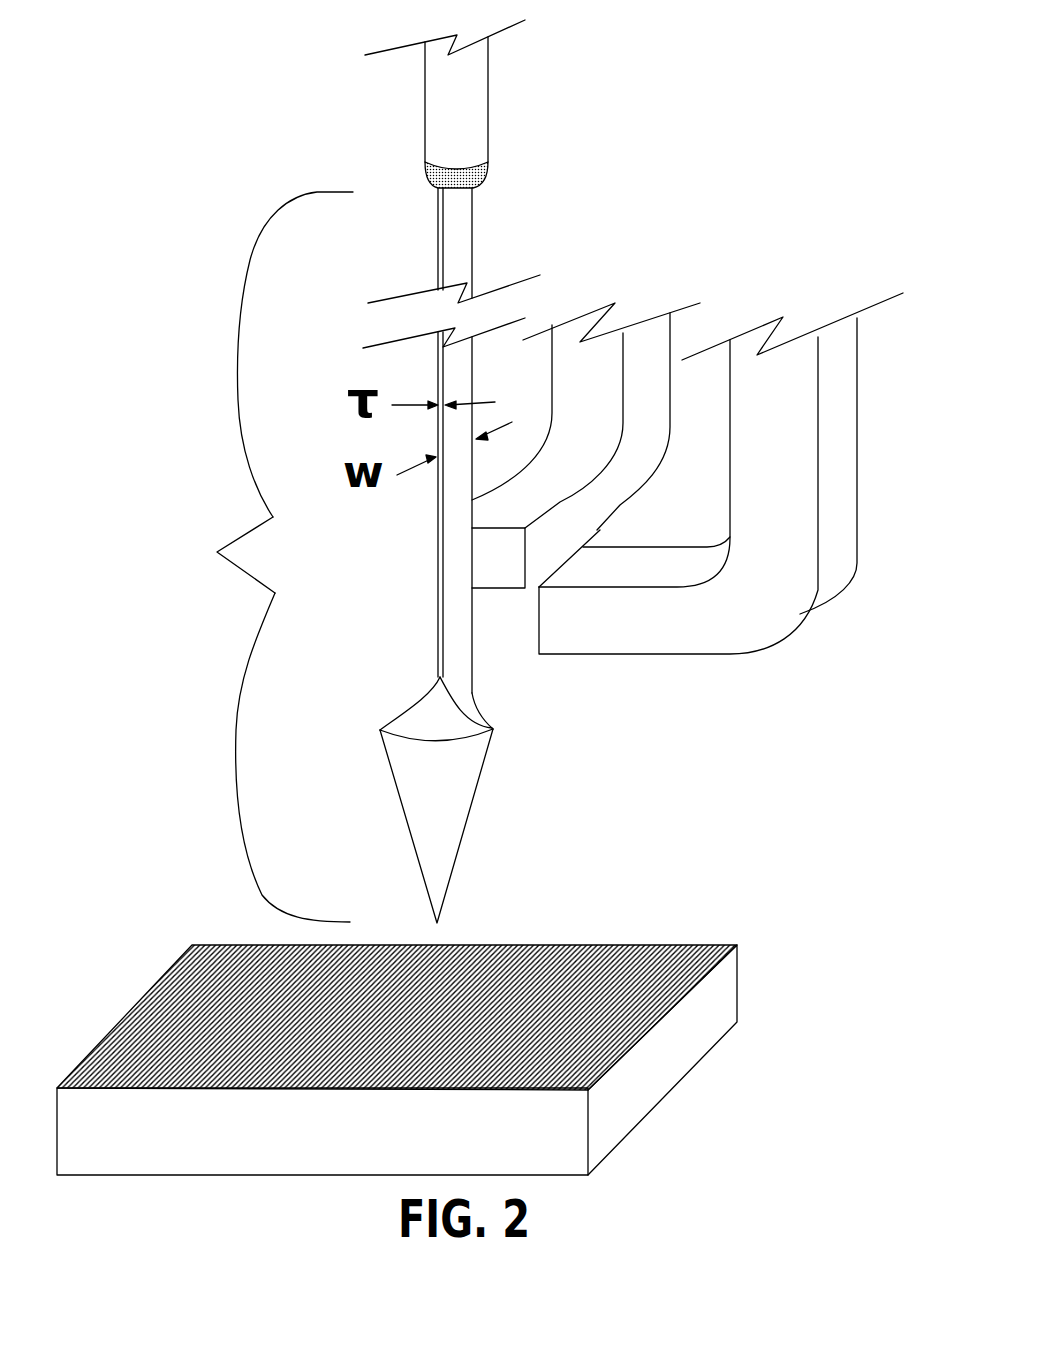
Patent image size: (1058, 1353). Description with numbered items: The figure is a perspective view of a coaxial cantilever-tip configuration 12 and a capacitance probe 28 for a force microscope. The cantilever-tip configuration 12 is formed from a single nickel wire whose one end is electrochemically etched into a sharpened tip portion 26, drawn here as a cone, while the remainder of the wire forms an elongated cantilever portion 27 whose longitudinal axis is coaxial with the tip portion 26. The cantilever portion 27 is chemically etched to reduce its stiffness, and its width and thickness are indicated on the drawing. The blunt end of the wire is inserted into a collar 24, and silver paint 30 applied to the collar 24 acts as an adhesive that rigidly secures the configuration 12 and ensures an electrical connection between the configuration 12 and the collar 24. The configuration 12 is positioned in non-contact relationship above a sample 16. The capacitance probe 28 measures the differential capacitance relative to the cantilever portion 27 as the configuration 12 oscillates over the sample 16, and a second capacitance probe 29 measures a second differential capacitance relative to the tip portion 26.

The cantilever-tip configuration 12 is at (248, 557).
The sample 16 is at (195, 967).
The collar 24 is at (485, 80).
The tip portion 26 is at (452, 843).
The cantilever portion 27 is at (451, 520).
The capacitance probe 28 is at (602, 638).
The second capacitance probe 29 is at (502, 568).
The silver paint 30 is at (483, 180).